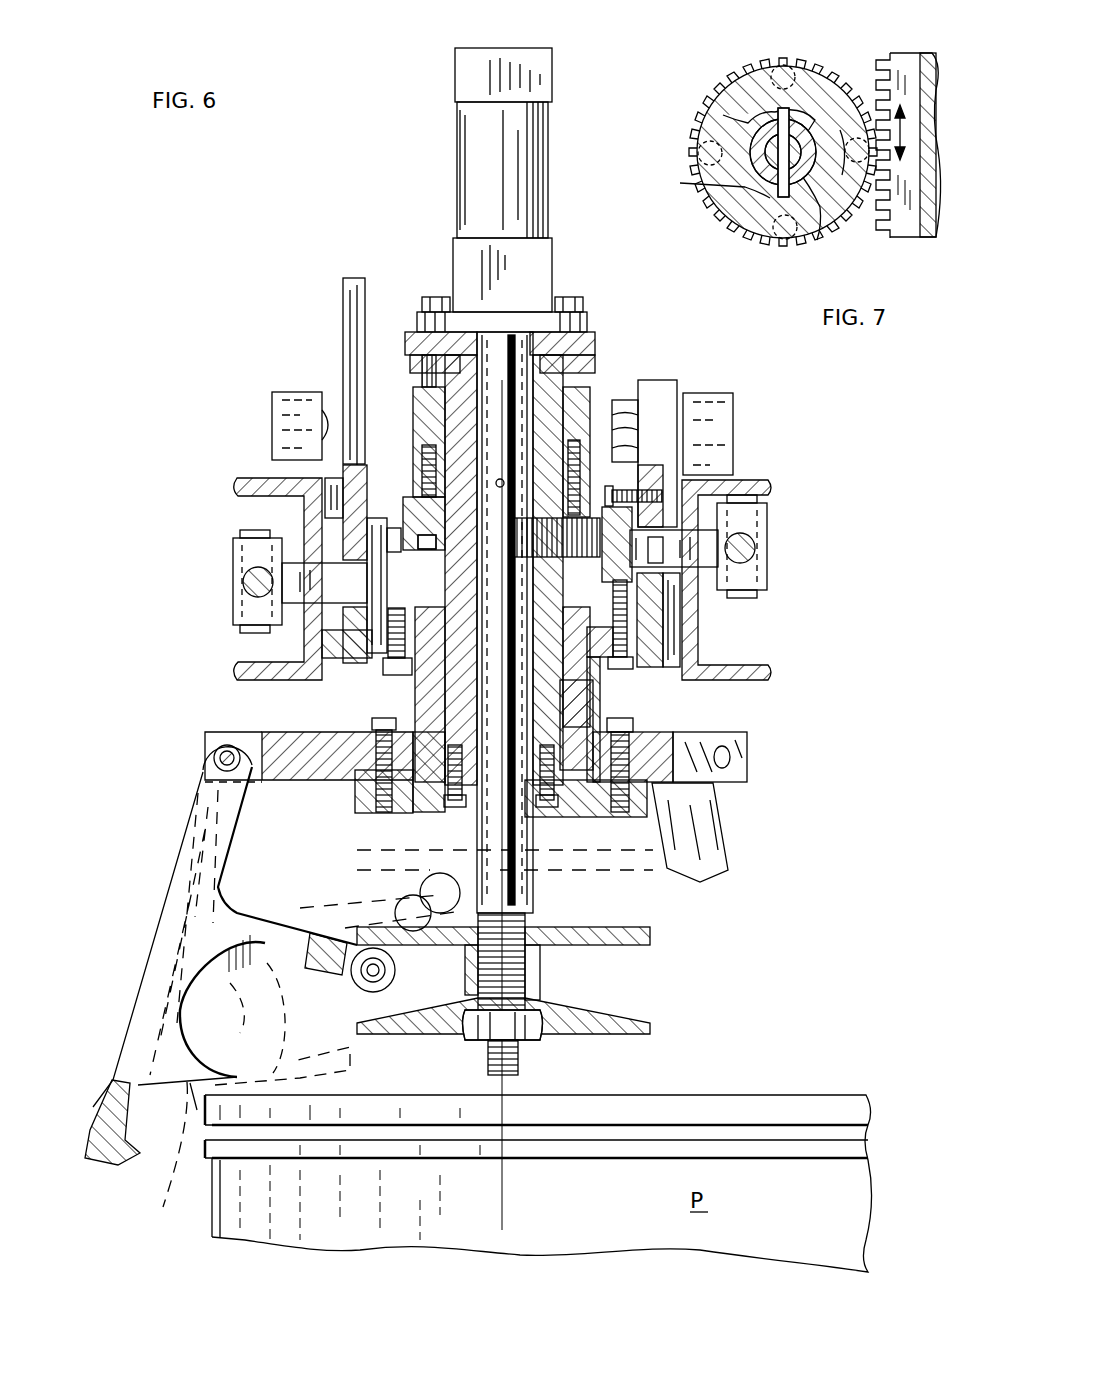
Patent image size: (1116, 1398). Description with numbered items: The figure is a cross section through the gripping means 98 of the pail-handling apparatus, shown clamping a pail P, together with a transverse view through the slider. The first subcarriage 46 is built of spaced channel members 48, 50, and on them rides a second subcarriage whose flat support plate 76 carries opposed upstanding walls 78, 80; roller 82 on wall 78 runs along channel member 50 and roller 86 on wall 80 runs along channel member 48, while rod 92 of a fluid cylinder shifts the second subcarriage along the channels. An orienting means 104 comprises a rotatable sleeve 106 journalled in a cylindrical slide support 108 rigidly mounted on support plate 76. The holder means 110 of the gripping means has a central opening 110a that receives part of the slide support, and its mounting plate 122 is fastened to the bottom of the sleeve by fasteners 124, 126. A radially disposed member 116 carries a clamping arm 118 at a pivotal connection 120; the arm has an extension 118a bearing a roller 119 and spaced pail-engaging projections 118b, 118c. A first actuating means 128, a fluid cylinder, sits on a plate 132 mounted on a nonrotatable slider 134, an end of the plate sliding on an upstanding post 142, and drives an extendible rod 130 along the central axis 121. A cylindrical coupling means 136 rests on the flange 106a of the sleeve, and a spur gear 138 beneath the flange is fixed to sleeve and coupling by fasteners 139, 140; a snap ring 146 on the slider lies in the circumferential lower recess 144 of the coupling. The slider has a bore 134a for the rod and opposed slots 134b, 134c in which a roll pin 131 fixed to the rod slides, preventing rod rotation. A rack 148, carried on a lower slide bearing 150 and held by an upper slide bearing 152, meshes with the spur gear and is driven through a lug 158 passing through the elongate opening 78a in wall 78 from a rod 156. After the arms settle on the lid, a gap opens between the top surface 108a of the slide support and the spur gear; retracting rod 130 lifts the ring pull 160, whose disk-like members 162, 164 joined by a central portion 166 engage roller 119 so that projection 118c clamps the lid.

In FIG. 6, the first subcarriage 46 is at (190, 482).
In FIG. 6, the channel member 48 is at (258, 672).
In FIG. 6, the channel member 50 is at (720, 670).
In FIG. 6, the support plate 76 is at (381, 650).
In FIG. 6, the upstanding wall 78 is at (660, 612).
In FIG. 7, the upstanding wall 78 is at (932, 215).
In FIG. 6, the opening 78a is at (700, 498).
In FIG. 6, the upstanding wall 80 is at (360, 510).
In FIG. 6, the roller 82 is at (735, 400).
In FIG. 6, the roller 86 is at (285, 430).
In FIG. 6, the rod 92 is at (255, 582).
In FIG. 6, the gripping means 98 is at (768, 828).
In FIG. 6, the orienting means 104 is at (448, 636).
In FIG. 6, the rotatable sleeve 106 is at (430, 582).
In FIG. 6, the flange 106a is at (435, 420).
In FIG. 6, the slide support 108 is at (585, 705).
In FIG. 6, the top surface 108a is at (650, 598).
In FIG. 6, the holder means 110 is at (695, 755).
In FIG. 6, the central opening 110a is at (630, 712).
In FIG. 6, the member 116 is at (320, 735).
In FIG. 6, the clamping arm 118 is at (175, 860).
In FIG. 6, the extension 118a is at (185, 955).
In FIG. 6, the pail-engaging projection 118b is at (218, 1130).
In FIG. 6, the pail-engaging projection 118c is at (118, 1130).
In FIG. 6, the roller 119 is at (365, 1000).
In FIG. 6, the pivotal connection 120 is at (218, 755).
In FIG. 6, the central axis 121 is at (503, 1183).
In FIG. 6, the mounting plate 122 is at (585, 818).
In FIG. 6, the fastener 124 is at (380, 810).
In FIG. 6, the fastener 126 is at (572, 835).
In FIG. 6, the first actuating means 128 is at (523, 207).
In FIG. 6, the rod 130 is at (497, 862).
In FIG. 7, the rod 130 is at (797, 158).
In FIG. 6, the roll pin 131 is at (503, 480).
In FIG. 7, the roll pin 131 is at (770, 120).
In FIG. 6, the plate 132 is at (588, 320).
In FIG. 6, the slider 134 is at (588, 400).
In FIG. 7, the slider 134 is at (720, 180).
In FIG. 6, the bore 134a is at (560, 430).
In FIG. 7, the bore 134a is at (748, 120).
In FIG. 6, the slot 134b is at (520, 340).
In FIG. 7, the slot 134b is at (815, 120).
In FIG. 7, the slot 134c is at (800, 175).
In FIG. 6, the coupling means 136 is at (590, 415).
In FIG. 7, the coupling means 136 is at (812, 75).
In FIG. 6, the spur gear 138 is at (500, 570).
In FIG. 7, the spur gear 138 is at (700, 140).
In FIG. 6, the fastener 139 is at (420, 505).
In FIG. 7, the fastener 139 is at (705, 110).
In FIG. 6, the fastener 140 is at (625, 460).
In FIG. 6, the pin or post 142 is at (347, 298).
In FIG. 6, the circumferential lower recess 144 is at (592, 370).
In FIG. 6, the snap ring 146 is at (445, 410).
In FIG. 6, the rack 148 is at (655, 500).
In FIG. 7, the rack 148 is at (905, 62).
In FIG. 6, the lower slide bearing 150 is at (626, 632).
In FIG. 6, the upper slide bearing 152 is at (640, 520).
In FIG. 6, the rod 156 is at (755, 552).
In FIG. 6, the lug 158 is at (690, 545).
In FIG. 6, the ring pull 160 is at (640, 998).
In FIG. 6, the disk-like member 162 is at (640, 938).
In FIG. 6, the disk-like member 164 is at (565, 1030).
In FIG. 6, the central portion 166 is at (535, 990).